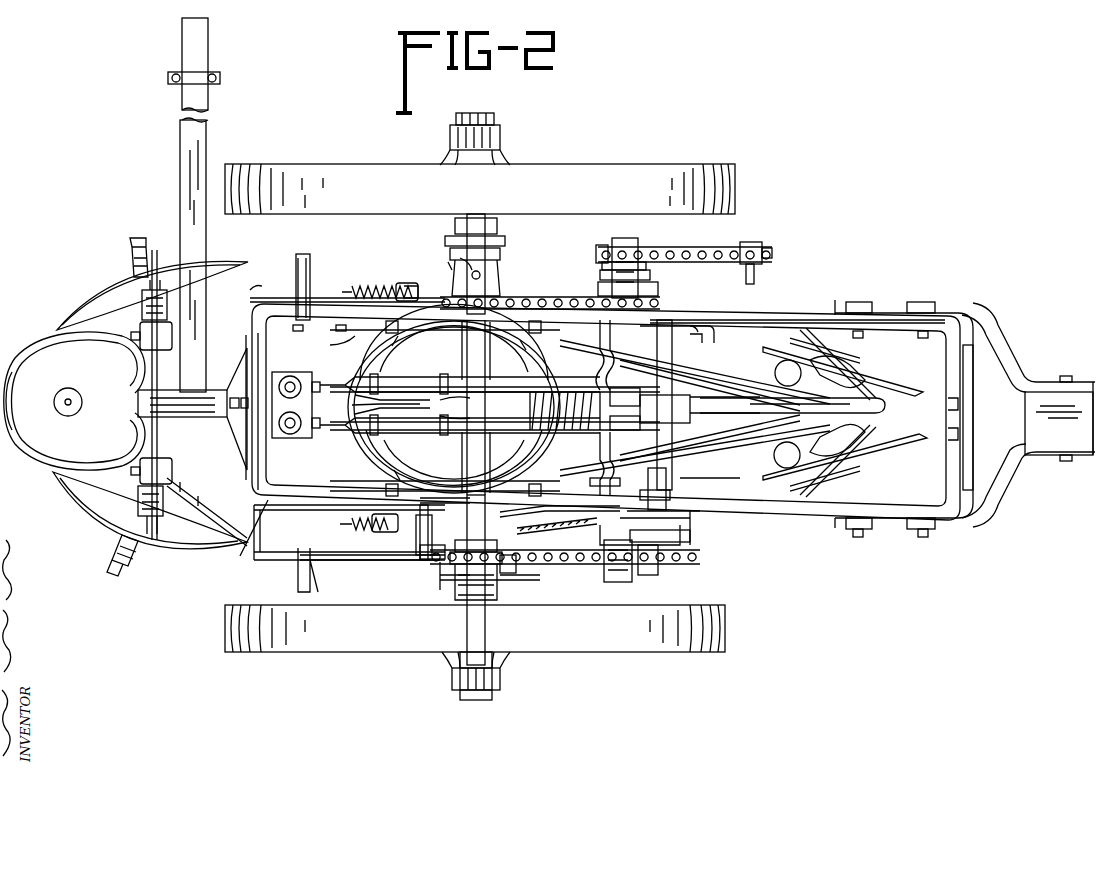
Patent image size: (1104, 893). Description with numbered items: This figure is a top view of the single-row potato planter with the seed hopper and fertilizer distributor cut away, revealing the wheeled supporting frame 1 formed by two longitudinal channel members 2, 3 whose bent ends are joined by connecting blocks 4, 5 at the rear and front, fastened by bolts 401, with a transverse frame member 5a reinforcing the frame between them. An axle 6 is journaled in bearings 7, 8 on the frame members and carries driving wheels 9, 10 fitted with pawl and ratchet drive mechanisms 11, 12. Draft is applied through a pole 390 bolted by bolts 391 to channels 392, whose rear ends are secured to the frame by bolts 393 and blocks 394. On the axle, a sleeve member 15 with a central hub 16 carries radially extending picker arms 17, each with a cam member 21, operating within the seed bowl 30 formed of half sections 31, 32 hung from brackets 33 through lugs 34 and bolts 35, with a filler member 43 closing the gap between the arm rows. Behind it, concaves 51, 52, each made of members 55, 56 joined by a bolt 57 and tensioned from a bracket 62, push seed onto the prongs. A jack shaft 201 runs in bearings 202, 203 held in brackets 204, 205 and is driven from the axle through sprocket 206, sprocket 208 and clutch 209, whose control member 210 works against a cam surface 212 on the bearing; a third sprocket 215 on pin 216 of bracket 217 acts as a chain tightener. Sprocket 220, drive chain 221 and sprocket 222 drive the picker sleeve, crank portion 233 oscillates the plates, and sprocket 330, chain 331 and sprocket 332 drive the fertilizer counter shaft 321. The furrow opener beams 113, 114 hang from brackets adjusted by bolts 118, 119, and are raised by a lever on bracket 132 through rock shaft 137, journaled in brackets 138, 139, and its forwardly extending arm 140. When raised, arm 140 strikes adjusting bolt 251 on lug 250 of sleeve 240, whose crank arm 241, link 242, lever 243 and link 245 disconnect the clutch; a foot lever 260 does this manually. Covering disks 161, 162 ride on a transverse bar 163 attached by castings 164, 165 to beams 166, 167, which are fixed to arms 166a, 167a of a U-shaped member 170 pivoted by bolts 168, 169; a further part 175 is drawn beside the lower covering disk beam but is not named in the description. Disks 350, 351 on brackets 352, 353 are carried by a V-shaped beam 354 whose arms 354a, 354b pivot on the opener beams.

The wheeled supporting frame 1 is at (826, 528).
The longitudinally extending channel member 2 is at (783, 510).
The longitudinally extending channel member 3 is at (893, 320).
The connecting block 4 is at (244, 362).
The connecting block 5 is at (974, 414).
The transverse frame member 5a is at (655, 326).
The axle 6 is at (478, 700).
The bearing 7 is at (420, 530).
The bearing 8 is at (497, 280).
The carrying wheel 9 is at (663, 645).
The carrying wheel 10 is at (603, 182).
The pawl and ratchet drive mechanism 11 is at (500, 690).
The pawl and ratchet drive mechanism 12 is at (500, 135).
The sleeve member 15 is at (548, 435).
The central hub 16 is at (528, 418).
The picker arm 17 is at (612, 432).
The cam member 21 is at (445, 505).
The seed bowl 30 is at (508, 566).
The bowl half section 31 is at (382, 480).
The bowl half section 32 is at (362, 340).
The bracket 33 is at (386, 327).
The lug 34 is at (545, 338).
The bolt 35 is at (548, 320).
The filler member 43 is at (596, 408).
The concave 51 is at (358, 432).
The concave 52 is at (352, 380).
The concave member 55 is at (352, 425).
The concave member 56 is at (350, 420).
The bolt 57 is at (296, 436).
The bracket 62 is at (278, 378).
The beam 113 is at (742, 440).
The beam 114 is at (710, 385).
The bolt 118 is at (322, 300).
The bolt 119 is at (303, 254).
The bracket 132 is at (280, 566).
The rock shaft 137 is at (712, 338).
The bracket 138 is at (700, 484).
The bracket 139 is at (702, 320).
The forwardly extending arm 140 is at (726, 440).
The covering disk 161 is at (90, 488).
The covering disk 162 is at (100, 312).
The transverse bar 163 is at (160, 445).
The casting 164 is at (165, 465).
The casting 165 is at (150, 337).
The rearwardly extending beam 166 is at (226, 495).
The arm 166a is at (285, 512).
The rearwardly extending beam 167 is at (240, 282).
The arm 167a is at (342, 296).
The bolt 168 is at (425, 580).
The bolt 169 is at (452, 290).
The U-shaped member 170 is at (248, 300).
The spring 175 is at (390, 542).
The jack shaft 201 is at (612, 582).
The bearing 202 is at (668, 560).
The bearing 203 is at (640, 278).
The bracket 204 is at (660, 535).
The bracket 205 is at (612, 292).
The sprocket 206 is at (650, 578).
The sprocket 208 is at (508, 600).
The clutch 209 is at (466, 584).
The control member 210 is at (500, 585).
The cam surface 212 is at (408, 562).
The third sprocket 215 is at (560, 570).
The pin 216 is at (552, 533).
The bracket 217 is at (665, 548).
The sprocket 220 is at (658, 294).
The drive chain 221 is at (535, 296).
The sprocket 222 is at (450, 276).
The crank portion 233 is at (622, 444).
The sleeve 240 is at (690, 420).
The crank arm 241 is at (668, 500).
The link 242 is at (664, 515).
The lever 243 is at (590, 482).
The link 245 is at (565, 508).
The lug 250 is at (672, 400).
The adjusting bolt 251 is at (775, 373).
The foot lever 260 is at (258, 540).
The counter shaft 321 is at (754, 278).
The sprocket 330 is at (602, 252).
The chain 331 is at (672, 250).
The sprocket 332 is at (766, 256).
The disk 350 is at (890, 448).
The disk 351 is at (915, 392).
The bracket 352 is at (820, 465).
The bracket 353 is at (855, 392).
The V-shaped beam 354 is at (860, 415).
The arm 354a is at (798, 472).
The arm 354b is at (835, 375).
The pole 390 is at (1050, 432).
The bolt 391 is at (1066, 376).
The channel 392 is at (1000, 500).
The bolt 393 is at (920, 537).
The block 394 is at (920, 519).
The bolt 401 is at (298, 318).